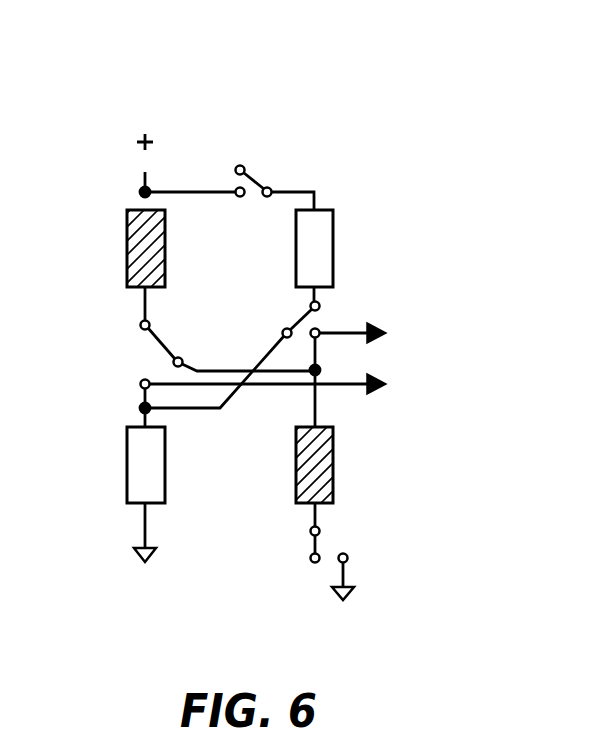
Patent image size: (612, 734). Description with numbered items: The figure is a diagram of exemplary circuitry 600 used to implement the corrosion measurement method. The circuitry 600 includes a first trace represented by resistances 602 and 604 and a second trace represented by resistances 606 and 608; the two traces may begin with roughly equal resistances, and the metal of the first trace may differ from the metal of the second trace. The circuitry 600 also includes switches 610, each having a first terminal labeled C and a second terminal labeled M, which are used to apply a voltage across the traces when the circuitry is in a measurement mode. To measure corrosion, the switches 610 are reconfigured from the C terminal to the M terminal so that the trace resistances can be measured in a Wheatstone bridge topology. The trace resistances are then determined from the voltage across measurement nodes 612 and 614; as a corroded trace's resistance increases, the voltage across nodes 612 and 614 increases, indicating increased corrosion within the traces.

The circuitry 600 is at (438, 113).
The resistance 602 is at (127, 250).
The resistance 604 is at (333, 465).
The resistance 606 is at (333, 245).
The resistance 608 is at (127, 457).
The switches 610 is at (264, 167).
The node 612 is at (376, 334).
The node 614 is at (400, 386).